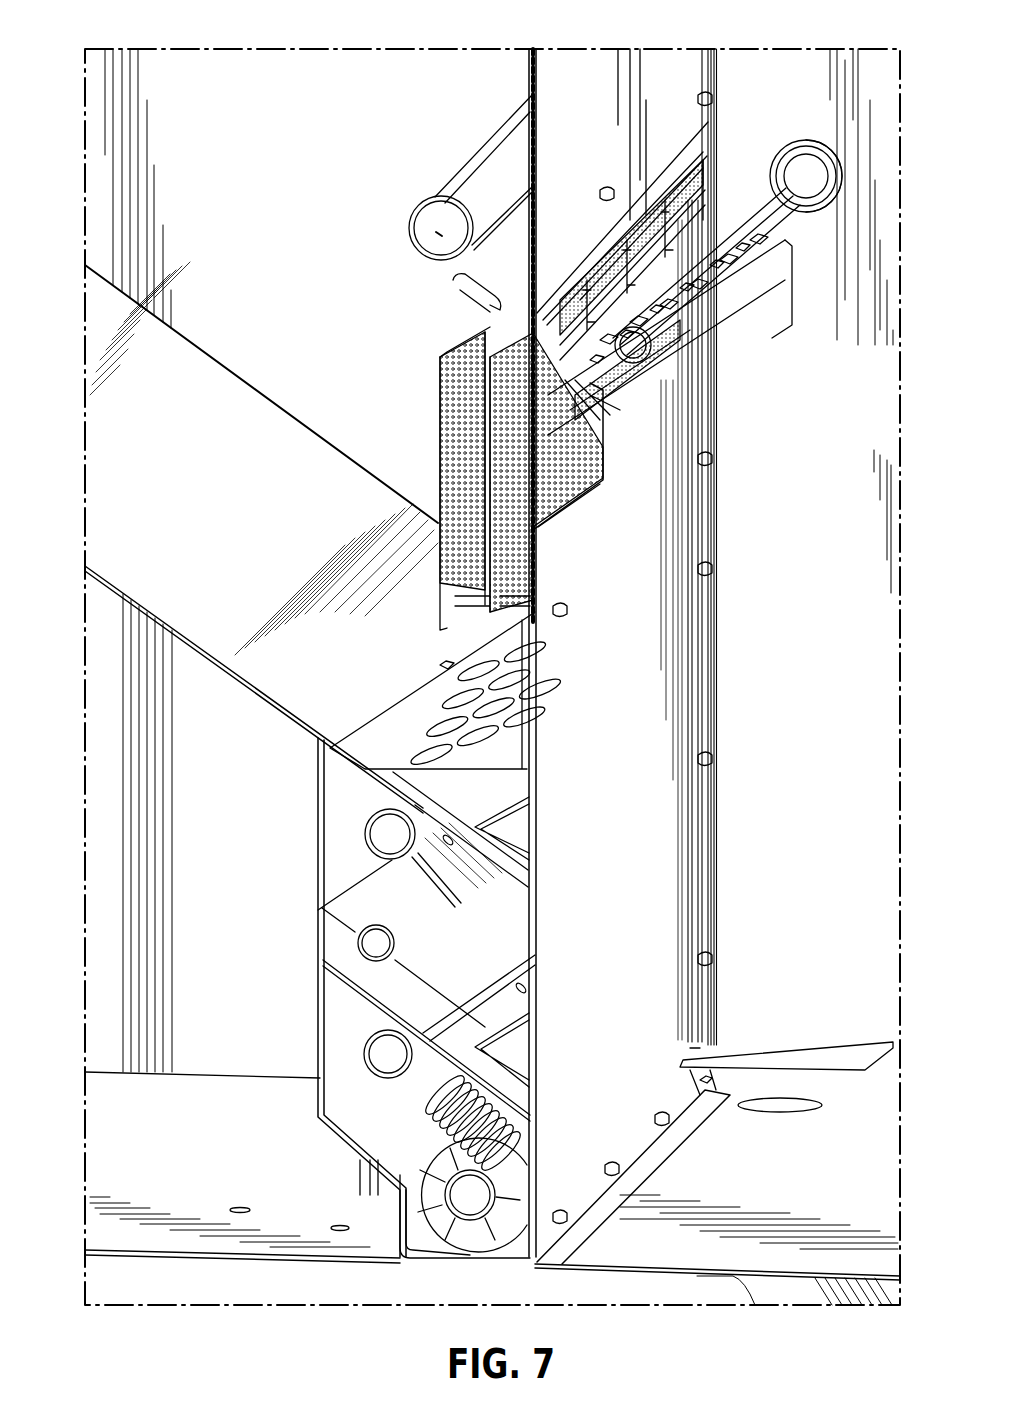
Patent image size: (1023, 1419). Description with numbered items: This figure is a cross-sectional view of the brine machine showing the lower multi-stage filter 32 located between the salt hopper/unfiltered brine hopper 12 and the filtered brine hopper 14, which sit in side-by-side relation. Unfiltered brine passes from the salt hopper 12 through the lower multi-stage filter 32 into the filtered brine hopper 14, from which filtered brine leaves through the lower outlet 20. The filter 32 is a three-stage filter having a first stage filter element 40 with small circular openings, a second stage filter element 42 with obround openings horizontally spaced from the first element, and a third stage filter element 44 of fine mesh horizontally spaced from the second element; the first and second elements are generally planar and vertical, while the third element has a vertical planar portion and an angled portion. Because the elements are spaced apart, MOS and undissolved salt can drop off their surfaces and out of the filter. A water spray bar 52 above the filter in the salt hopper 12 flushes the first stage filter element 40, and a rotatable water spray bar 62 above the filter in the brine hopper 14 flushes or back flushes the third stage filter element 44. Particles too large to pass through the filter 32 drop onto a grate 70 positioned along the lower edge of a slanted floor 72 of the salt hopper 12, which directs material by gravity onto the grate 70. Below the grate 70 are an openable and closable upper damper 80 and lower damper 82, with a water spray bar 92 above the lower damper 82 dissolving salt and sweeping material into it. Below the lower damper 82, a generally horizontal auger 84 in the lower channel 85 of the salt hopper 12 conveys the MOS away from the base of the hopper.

The salt hopper/unfiltered brine hopper 12 is at (193, 70).
The filtered brine hopper 14 is at (880, 70).
The lower outlet 20 is at (780, 1100).
The lower multi-stage filter 32 is at (413, 356).
The first stage filter element 40 is at (438, 423).
The second stage filter element 42 is at (456, 541).
The third stage filter element 44 is at (700, 185).
The water spray bar 52 is at (430, 196).
The rotatable water spray bar 62 is at (778, 228).
The grate 70 is at (415, 735).
The slanted floor 72 is at (222, 382).
The upper damper 80 is at (480, 880).
The lower damper 82 is at (485, 1085).
The horizontal auger 84 is at (425, 1195).
The lower channel 85 is at (428, 1240).
The water spray bar 92 is at (385, 912).